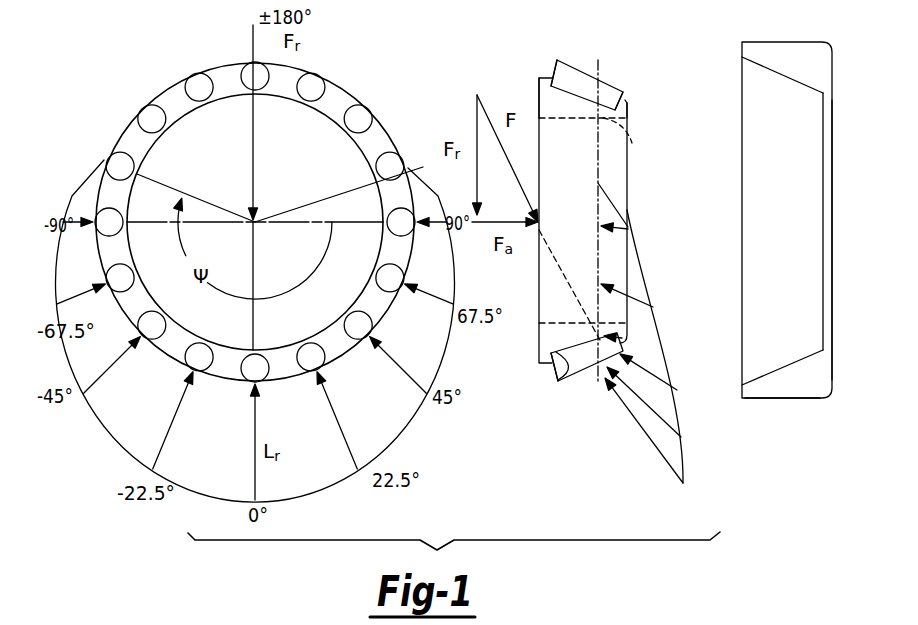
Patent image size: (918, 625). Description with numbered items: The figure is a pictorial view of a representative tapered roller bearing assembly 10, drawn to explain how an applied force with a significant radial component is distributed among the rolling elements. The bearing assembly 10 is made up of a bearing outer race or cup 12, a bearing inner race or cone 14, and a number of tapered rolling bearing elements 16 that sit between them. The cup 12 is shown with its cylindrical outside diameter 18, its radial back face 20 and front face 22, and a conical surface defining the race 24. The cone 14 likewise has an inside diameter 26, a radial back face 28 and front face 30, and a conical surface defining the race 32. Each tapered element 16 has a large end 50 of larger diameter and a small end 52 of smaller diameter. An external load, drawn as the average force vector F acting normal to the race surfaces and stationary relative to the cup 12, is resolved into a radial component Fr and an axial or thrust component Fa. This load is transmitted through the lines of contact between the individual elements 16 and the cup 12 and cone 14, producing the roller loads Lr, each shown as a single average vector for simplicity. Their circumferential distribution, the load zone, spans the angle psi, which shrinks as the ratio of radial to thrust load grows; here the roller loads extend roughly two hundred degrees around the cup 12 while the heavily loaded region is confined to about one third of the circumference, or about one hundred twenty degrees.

The tapered roller bearing assembly 10 is at (443, 68).
The bearing outer race or cup 12 is at (788, 30).
The bearing inner race or cone 14 is at (530, 352).
The tapered rolling bearing elements 16 is at (374, 92).
The cylindrical outside diameter 18 is at (787, 400).
The radial back face 20 is at (833, 370).
The front face 22 is at (742, 390).
The race 24 is at (767, 372).
The inside diameter 26 is at (632, 143).
The radial back face 28 is at (628, 106).
The front face 30 is at (538, 100).
The race 32 is at (560, 379).
The large end 50 is at (554, 64).
The small end 52 is at (625, 92).